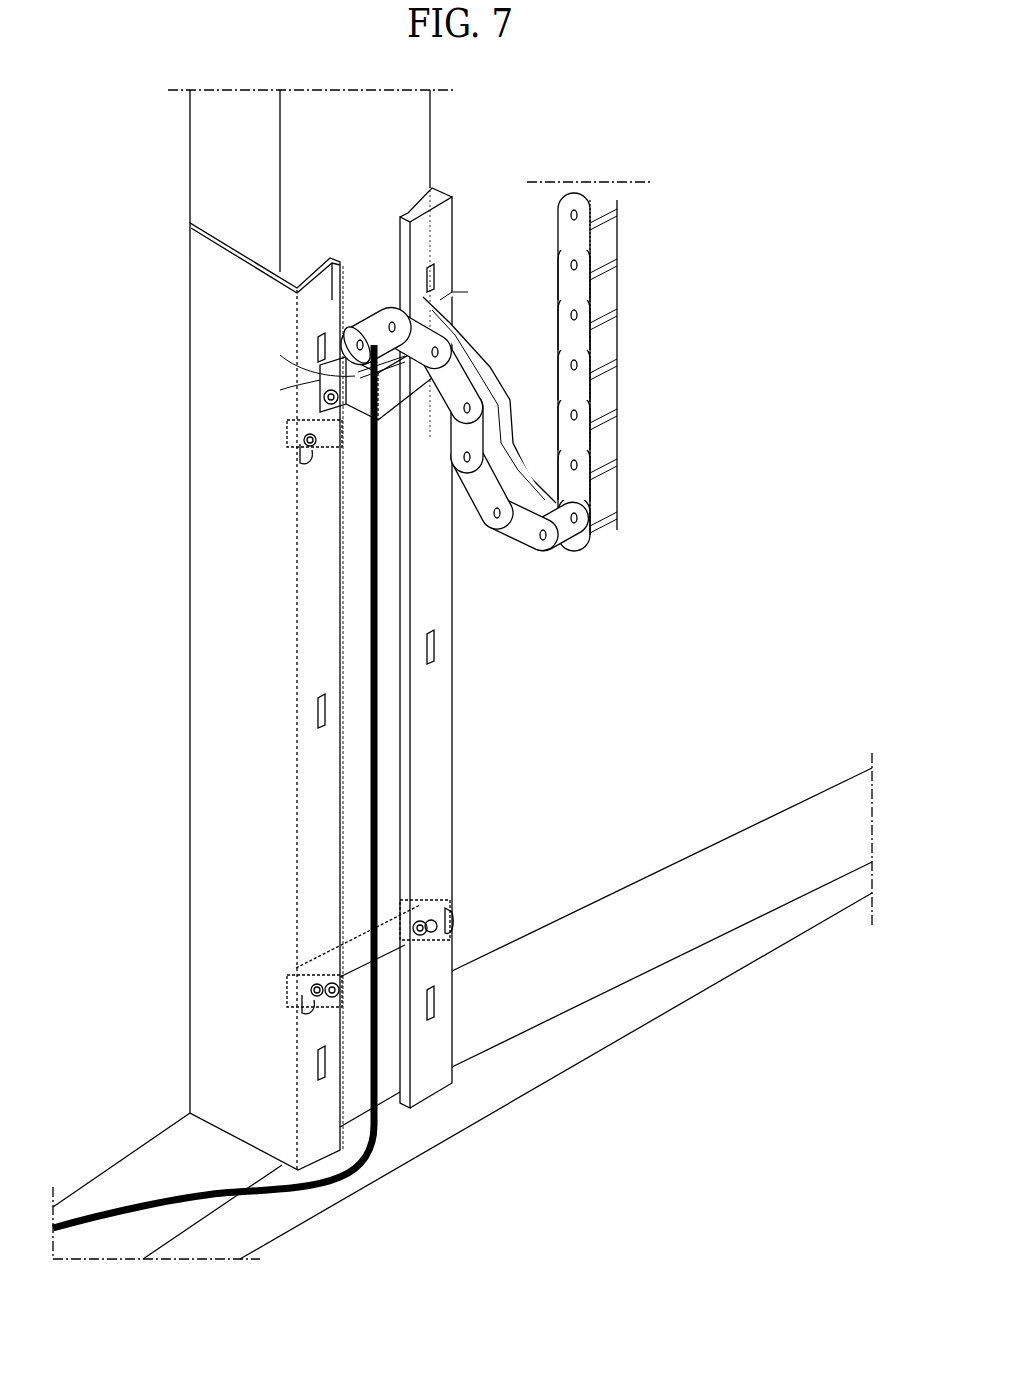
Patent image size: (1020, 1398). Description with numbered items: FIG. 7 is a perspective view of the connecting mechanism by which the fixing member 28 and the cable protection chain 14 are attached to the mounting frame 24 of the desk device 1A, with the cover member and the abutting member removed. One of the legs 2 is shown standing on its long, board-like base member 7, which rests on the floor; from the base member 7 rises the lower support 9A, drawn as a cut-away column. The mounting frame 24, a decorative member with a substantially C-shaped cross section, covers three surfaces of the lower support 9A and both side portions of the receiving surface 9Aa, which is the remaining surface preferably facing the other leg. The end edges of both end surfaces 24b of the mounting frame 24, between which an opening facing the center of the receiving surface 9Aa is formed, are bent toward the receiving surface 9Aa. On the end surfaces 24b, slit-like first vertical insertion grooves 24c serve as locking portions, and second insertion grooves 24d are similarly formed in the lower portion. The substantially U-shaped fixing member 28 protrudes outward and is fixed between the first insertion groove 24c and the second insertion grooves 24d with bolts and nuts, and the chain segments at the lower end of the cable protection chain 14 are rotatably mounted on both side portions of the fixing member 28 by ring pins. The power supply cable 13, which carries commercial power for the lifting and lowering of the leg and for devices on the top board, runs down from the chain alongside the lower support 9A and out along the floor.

The desk device 1A is at (150, 212).
The legs 2 is at (150, 735).
The base member 7 is at (680, 885).
The lower support 9A is at (200, 127).
The receiving surface 9Aa is at (415, 134).
The power supply cable 13 is at (140, 1205).
The cable protection chain 14 is at (612, 387).
The mounting frame 24 is at (193, 262).
The end surfaces 24b is at (320, 505).
The first vertical insertion grooves 24c is at (318, 350).
The second insertion grooves 24d is at (305, 447).
The fixing member 28 is at (340, 398).